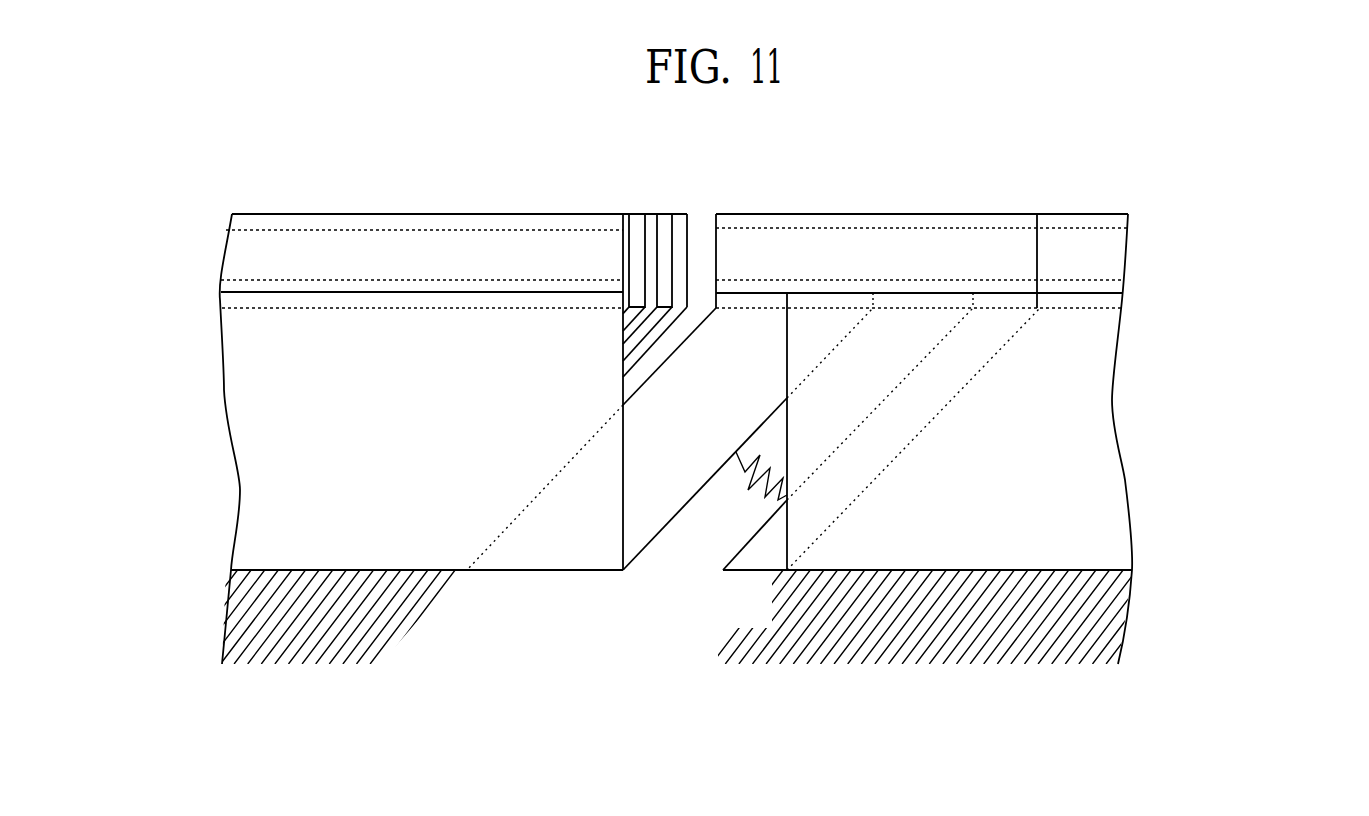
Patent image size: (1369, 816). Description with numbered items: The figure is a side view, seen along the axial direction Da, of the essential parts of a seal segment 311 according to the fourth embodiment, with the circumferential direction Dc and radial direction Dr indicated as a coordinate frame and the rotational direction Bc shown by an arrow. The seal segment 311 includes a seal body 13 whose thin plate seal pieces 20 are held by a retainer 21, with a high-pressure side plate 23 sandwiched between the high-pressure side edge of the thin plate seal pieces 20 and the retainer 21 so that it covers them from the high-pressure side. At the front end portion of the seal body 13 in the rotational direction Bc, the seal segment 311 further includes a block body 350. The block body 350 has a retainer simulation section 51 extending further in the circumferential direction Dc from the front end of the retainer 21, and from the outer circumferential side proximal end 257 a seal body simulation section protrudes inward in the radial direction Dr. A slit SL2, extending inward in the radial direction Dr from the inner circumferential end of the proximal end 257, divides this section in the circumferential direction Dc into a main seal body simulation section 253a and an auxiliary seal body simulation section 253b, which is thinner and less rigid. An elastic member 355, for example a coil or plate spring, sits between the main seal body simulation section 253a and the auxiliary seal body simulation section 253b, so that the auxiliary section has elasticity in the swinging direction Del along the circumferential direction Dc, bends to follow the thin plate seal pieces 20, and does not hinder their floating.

The seal segment 311 is at (992, 159).
The seal body 13 is at (1148, 210).
The retainer 21 is at (1110, 250).
The retainer simulation section 51 is at (912, 214).
The outer circumferential side proximal end 257 is at (856, 250).
The elastic member 355 is at (752, 458).
The high-pressure side plate 23 is at (467, 572).
The thin plate seal piece 20 is at (1115, 612).
The main seal body simulation section 253a is at (649, 552).
The auxiliary seal body simulation section 253b is at (722, 558).
The block body 350 is at (601, 656).
The slit SL2 is at (763, 512).
The swinging direction Del is at (760, 590).
The rotational direction Bc is at (637, 173).
The circumferential direction Dc is at (1309, 349).
The radial direction Dr is at (1278, 385).
The axial direction Da is at (1249, 518).